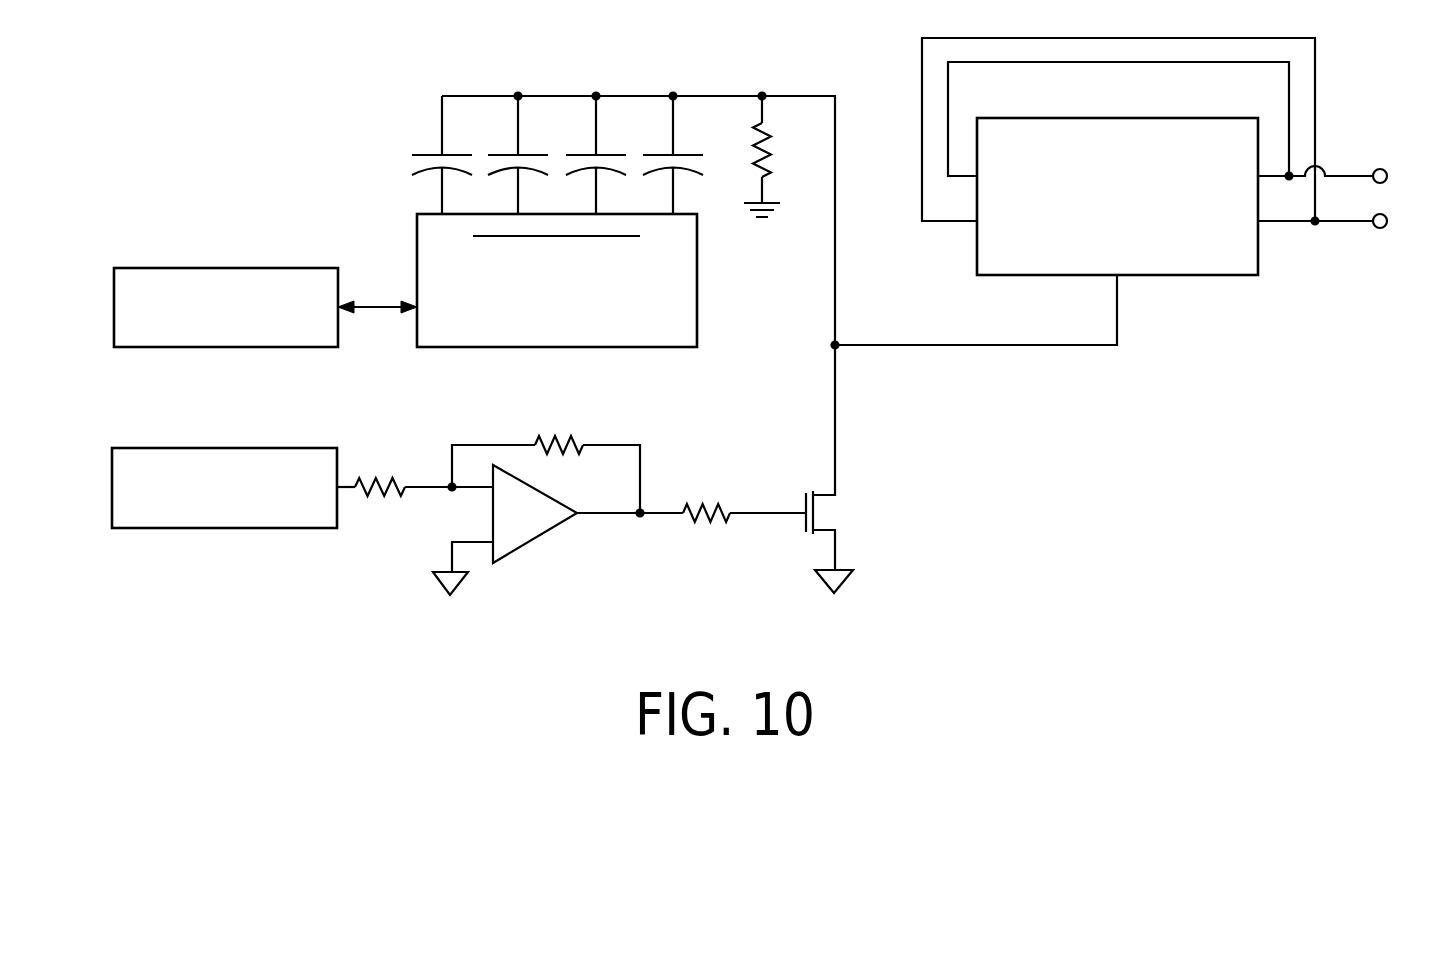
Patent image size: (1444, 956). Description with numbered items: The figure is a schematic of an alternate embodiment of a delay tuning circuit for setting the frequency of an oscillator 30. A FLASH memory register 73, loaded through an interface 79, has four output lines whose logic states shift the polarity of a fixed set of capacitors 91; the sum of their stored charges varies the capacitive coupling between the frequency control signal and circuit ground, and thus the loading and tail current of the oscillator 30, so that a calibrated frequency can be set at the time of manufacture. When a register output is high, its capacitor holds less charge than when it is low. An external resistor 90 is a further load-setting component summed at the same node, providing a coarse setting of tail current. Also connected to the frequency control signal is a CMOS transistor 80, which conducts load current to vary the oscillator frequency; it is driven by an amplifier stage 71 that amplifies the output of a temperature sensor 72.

The oscillator 30 is at (1163, 125).
The amplifier stage 71 is at (545, 535).
The temperature sensor 72 is at (157, 458).
The FLASH memory register 73 is at (628, 347).
The interface 79 is at (157, 275).
The CMOS transistor 80 is at (803, 503).
The external resistor 90 is at (763, 177).
The capacitors 91 is at (410, 141).